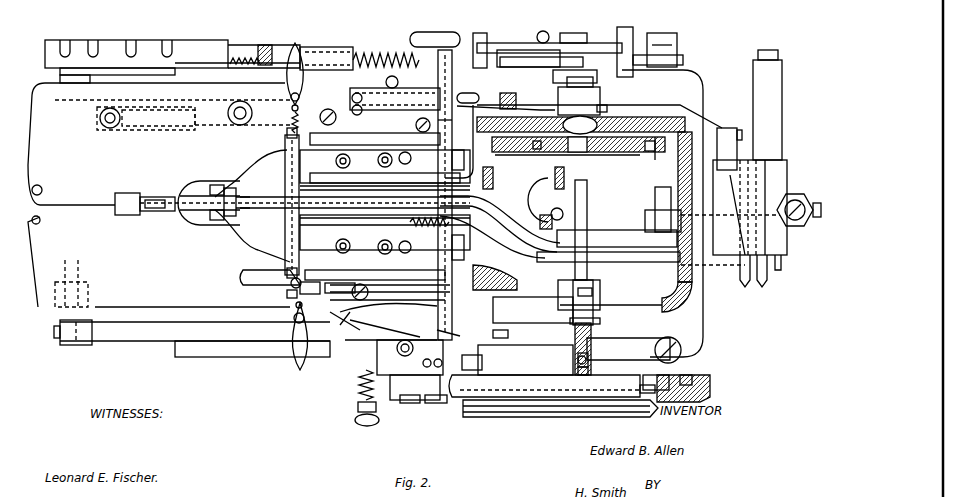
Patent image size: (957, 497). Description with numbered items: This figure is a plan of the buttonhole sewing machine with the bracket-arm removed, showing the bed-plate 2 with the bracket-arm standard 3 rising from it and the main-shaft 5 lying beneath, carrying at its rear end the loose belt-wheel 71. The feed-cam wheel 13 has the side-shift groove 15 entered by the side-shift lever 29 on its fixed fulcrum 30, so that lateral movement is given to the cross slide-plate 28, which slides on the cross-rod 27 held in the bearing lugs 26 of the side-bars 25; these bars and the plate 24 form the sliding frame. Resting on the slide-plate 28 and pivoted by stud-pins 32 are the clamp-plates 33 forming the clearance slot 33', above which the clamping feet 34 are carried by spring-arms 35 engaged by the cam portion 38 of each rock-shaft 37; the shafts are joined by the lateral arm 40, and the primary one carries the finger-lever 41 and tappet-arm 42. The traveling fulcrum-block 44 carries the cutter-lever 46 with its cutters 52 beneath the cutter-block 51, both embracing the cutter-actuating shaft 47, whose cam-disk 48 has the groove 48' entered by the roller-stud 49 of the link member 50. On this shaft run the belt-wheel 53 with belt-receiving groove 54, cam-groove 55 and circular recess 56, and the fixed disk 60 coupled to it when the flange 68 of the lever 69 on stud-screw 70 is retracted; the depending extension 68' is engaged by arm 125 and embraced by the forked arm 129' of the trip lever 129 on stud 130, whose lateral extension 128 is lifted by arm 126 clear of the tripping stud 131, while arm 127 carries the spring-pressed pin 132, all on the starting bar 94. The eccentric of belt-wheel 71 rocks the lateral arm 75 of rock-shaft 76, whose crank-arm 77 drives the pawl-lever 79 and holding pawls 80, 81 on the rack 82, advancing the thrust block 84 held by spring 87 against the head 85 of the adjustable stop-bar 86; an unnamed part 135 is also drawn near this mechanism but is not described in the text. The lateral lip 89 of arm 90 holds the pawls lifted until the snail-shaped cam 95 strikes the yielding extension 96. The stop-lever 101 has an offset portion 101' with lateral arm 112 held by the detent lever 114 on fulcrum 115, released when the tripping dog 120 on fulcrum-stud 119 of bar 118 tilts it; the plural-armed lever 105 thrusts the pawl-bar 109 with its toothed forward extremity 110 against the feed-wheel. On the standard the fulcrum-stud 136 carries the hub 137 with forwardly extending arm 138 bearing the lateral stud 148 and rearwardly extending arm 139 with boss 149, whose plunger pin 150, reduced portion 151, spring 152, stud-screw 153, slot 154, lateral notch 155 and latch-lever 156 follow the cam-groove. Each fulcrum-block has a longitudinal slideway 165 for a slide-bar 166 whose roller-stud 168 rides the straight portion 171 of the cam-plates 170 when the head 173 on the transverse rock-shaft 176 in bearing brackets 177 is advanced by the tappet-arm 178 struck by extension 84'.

The bed-plate 2 is at (240, 357).
The bracket-arm standard 3 is at (626, 225).
The main-shaft 5 is at (545, 200).
The feed-cam wheel 13 is at (494, 184).
The side-shift groove 15 is at (305, 203).
The plate 24 is at (390, 291).
The side-bars 25 is at (122, 82).
The bearing lugs 26 is at (90, 345).
The cross-rod 27 is at (54, 314).
The cross slide-plate 28 is at (58, 262).
The side-shift lever 29 is at (207, 126).
The fixed fulcrum 30 is at (238, 126).
The stud-pins 32 is at (42, 187).
The clamp-plates 33 is at (143, 215).
The clearance slot 33' is at (145, 207).
The clamping feet 34 is at (190, 185).
The spring-arms 35 is at (258, 160).
The rock-shaft 37 is at (287, 133).
The cam portion 38 is at (385, 202).
The lateral arm 40 is at (285, 160).
The finger-lever 41 is at (258, 287).
The tappet-arm 42 is at (327, 289).
The traveling fulcrum-block 44 is at (385, 202).
The cutter-lever 46 is at (527, 235).
The cutter-actuating shaft 47 is at (608, 230).
The cam-disk 48 is at (660, 157).
The groove 48' is at (643, 160).
The roller-stud 49 is at (535, 152).
The link member 50 is at (520, 158).
The cutter-block 51 is at (230, 222).
The cutters 52 is at (214, 222).
The belt-wheel 53 is at (712, 389).
The belt-receiving groove 54 is at (463, 407).
The cam-groove 55 is at (690, 377).
The circular recess 56 is at (639, 383).
The disk 60 is at (650, 383).
The flange 68 is at (525, 355).
The depending extension 68' is at (477, 353).
The lever 69 is at (628, 349).
The stud-screw 70 is at (672, 346).
The loose belt-wheel 71 is at (762, 278).
The lateral arm 75 is at (658, 237).
The rock-shaft 76 is at (662, 208).
The crank-arm 77 is at (655, 35).
The pawl-lever 79 is at (642, 65).
The primary holding pawl 80 is at (541, 63).
The auxiliary holding pawl 81 is at (529, 50).
The rack 82 is at (504, 43).
The thrust block 84 is at (292, 80).
The extension 84' is at (338, 52).
The head 85 is at (263, 45).
The adjustable stop-bar 86 is at (238, 47).
The spring 87 is at (393, 56).
The lateral lip 89 is at (600, 95).
The arm 90 is at (592, 35).
The starting bar 94 is at (378, 408).
The snail-shaped cam 95 is at (553, 75).
The yielding extension 96 is at (623, 30).
The stop-lever 101 is at (800, 221).
The offset portion 101' is at (768, 152).
The plural-armed lever 105 is at (375, 275).
The pawl-bar 109 is at (422, 232).
The toothed forward extremity 110 is at (430, 306).
The lateral arm 112 is at (729, 149).
The detent lever 114 is at (546, 117).
The fulcrum 115 is at (608, 110).
The bar 118 is at (478, 98).
The fulcrum-stud 119 is at (507, 93).
The tripping dog 120 is at (522, 105).
The arm 125 is at (440, 403).
The arm 126 is at (422, 407).
The arm 127 is at (411, 389).
The lateral extension 128 is at (410, 363).
The trip lever 129 is at (391, 338).
The forked arm 129' is at (454, 344).
The stud 130 is at (403, 355).
The tripping stud 131 is at (360, 318).
The spring-pressed pin 132 is at (357, 380).
The bar 135 is at (437, 32).
The fulcrum-stud 136 is at (493, 320).
The hub 137 is at (497, 291).
The forwardly extending arm 138 is at (387, 310).
The rearwardly and upwardly extending arm 139 is at (533, 312).
The lateral stud 148 is at (308, 312).
The boss 149 is at (578, 357).
The plunger pin 150 is at (590, 370).
The reduced portion 151 is at (576, 302).
The spring 152 is at (596, 333).
The stud-screw 153 is at (590, 357).
The slot 154 is at (544, 384).
The lateral notch 155 is at (592, 342).
The latch-lever 156 is at (594, 293).
The longitudinal slideway 165 is at (375, 127).
The slide-bar 166 is at (445, 123).
The roller-stud 168 is at (380, 110).
The cam-plates 170 is at (432, 170).
The straight portion 171 is at (452, 70).
The head 173 is at (466, 207).
The transverse rock-shaft 176 is at (465, 241).
The bearing brackets 177 is at (467, 321).
The tappet-arm 178 is at (478, 44).